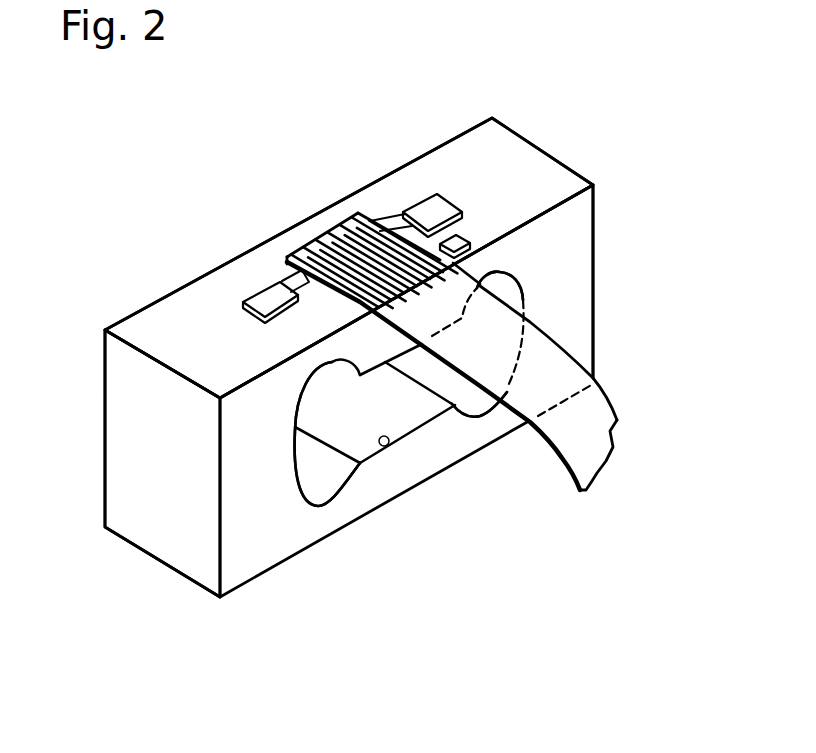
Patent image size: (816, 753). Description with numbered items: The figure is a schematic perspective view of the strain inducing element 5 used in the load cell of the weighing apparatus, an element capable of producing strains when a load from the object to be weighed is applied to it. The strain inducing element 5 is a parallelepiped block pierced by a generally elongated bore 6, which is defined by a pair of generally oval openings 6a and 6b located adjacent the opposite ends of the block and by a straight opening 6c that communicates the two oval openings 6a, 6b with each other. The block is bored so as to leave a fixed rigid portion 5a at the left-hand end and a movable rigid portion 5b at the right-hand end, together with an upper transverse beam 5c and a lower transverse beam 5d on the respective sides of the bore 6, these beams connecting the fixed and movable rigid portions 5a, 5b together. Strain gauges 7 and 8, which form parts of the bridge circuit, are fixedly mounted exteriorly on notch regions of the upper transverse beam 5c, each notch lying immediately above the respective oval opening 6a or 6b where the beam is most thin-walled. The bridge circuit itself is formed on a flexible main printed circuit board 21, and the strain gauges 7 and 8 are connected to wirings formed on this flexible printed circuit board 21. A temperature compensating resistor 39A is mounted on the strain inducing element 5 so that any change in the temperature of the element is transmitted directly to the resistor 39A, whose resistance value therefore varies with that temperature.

The strain inducing element 5 is at (356, 174).
The fixed rigid portion 5a is at (133, 418).
The movable rigid portion 5b is at (557, 156).
The upper transverse beam 5c is at (323, 352).
The lower transverse beam 5d is at (495, 257).
The bore 6 is at (415, 440).
The oval opening 6a is at (330, 364).
The oval opening 6b is at (522, 285).
The straight opening 6c is at (384, 446).
The strain gauge 7 is at (263, 297).
The strain gauge 8 is at (429, 204).
The temperature compensating resistor 39A is at (456, 242).
The flexible main printed circuit board 21 is at (563, 366).